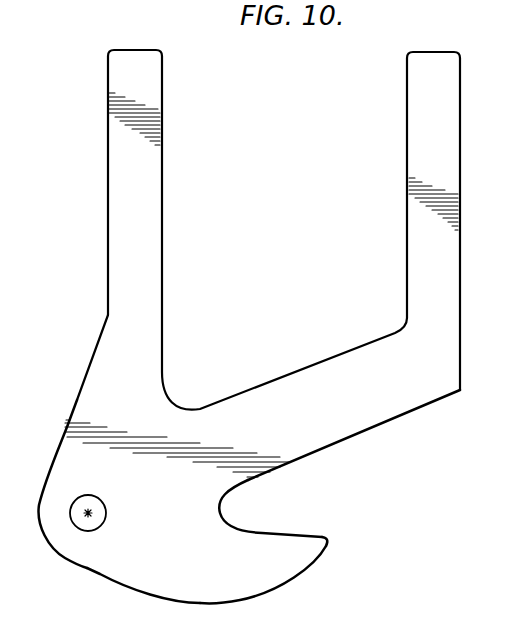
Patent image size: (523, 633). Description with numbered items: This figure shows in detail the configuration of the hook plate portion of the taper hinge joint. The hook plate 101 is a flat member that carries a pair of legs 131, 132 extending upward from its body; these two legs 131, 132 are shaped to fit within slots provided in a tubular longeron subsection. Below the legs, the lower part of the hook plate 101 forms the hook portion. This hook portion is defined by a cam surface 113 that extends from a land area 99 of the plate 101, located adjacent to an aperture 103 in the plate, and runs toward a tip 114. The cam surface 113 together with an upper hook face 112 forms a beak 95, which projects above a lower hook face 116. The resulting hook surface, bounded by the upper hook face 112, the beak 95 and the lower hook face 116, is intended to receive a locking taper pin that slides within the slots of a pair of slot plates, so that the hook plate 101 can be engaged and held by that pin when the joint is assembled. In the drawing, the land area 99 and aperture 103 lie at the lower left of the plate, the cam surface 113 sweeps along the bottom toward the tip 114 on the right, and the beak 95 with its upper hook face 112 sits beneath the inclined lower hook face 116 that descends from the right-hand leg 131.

The hook plate 101 is at (463, 362).
The leg 131 is at (422, 137).
The leg 132 is at (147, 183).
The lower hook face 116 is at (360, 434).
The upper hook face 112 is at (290, 532).
The tip 114 is at (328, 539).
The beak 95 is at (297, 558).
The cam surface 113 is at (193, 603).
The land area 99 is at (92, 548).
The aperture 103 is at (89, 512).